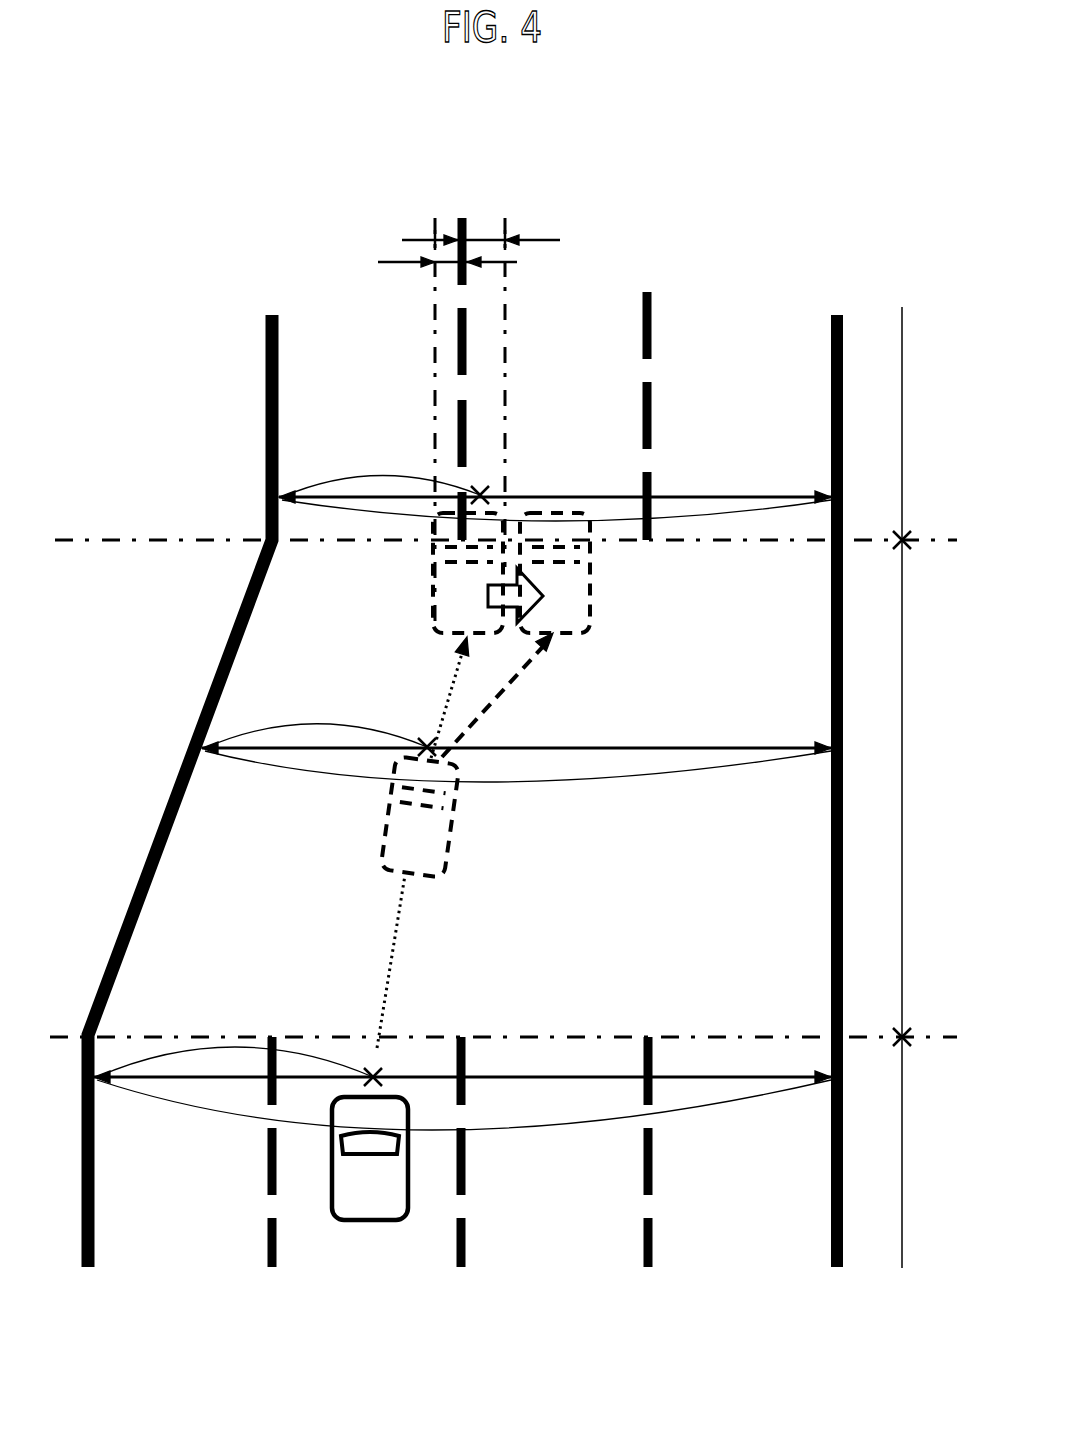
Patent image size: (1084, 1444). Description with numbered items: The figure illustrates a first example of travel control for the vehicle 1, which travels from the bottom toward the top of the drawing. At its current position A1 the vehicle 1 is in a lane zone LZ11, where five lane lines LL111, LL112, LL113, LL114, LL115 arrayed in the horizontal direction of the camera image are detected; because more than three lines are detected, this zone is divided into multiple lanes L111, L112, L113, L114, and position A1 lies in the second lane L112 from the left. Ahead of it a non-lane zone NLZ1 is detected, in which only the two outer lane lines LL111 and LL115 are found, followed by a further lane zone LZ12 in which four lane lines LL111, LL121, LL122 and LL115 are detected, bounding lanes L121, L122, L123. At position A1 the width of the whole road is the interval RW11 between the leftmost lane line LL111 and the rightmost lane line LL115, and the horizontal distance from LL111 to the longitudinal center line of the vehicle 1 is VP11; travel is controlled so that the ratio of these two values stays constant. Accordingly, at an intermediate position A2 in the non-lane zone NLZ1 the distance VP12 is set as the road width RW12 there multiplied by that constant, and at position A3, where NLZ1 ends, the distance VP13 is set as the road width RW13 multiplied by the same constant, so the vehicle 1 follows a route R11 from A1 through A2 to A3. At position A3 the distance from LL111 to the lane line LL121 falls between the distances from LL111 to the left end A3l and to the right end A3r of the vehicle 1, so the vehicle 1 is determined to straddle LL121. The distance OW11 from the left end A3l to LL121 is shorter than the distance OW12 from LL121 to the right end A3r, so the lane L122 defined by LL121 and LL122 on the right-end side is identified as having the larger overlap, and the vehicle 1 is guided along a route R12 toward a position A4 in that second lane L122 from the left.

The vehicle 1 is at (330, 1163).
The position A1 is at (410, 1165).
The position A2 is at (452, 862).
The position A3 is at (433, 593).
The left end of the vehicle A3l is at (435, 372).
The right end of the vehicle A3r is at (505, 372).
The position A4 is at (592, 590).
The route R11 is at (388, 935).
The route R12 is at (488, 713).
The horizontal distance VP11 is at (462, 1044).
The horizontal distance VP12 is at (516, 724).
The horizontal distance VP13 is at (555, 475).
The width of the whole road RW11 is at (464, 1108).
The width of the whole road RW12 is at (518, 779).
The width of the whole road RW13 is at (556, 523).
The distance OW11 is at (443, 263).
The distance OW12 is at (487, 237).
The lane L111 is at (162, 1242).
The second lane L112 is at (368, 1242).
The lane L113 is at (553, 1242).
The lane L114 is at (755, 1242).
The lane L121 is at (318, 308).
The lane L122 is at (597, 307).
The lane L123 is at (752, 307).
The leftmost lane line LL111 is at (90, 1270).
The lane line LL112 is at (272, 1270).
The lane line LL113 is at (461, 1270).
The lane line LL114 is at (648, 1270).
The rightmost lane line LL115 is at (836, 1270).
The lane line LL121 is at (463, 217).
The lane line LL122 is at (652, 218).
The lane zone LZ11 is at (918, 1186).
The lane zone LZ12 is at (918, 447).
The non-lane zone NLZ1 is at (918, 820).